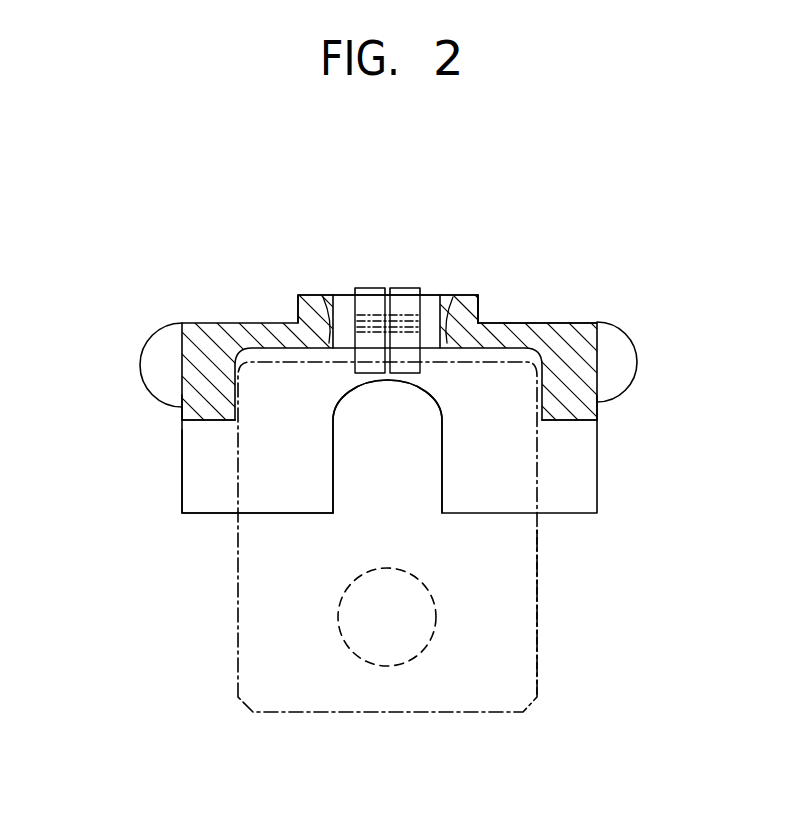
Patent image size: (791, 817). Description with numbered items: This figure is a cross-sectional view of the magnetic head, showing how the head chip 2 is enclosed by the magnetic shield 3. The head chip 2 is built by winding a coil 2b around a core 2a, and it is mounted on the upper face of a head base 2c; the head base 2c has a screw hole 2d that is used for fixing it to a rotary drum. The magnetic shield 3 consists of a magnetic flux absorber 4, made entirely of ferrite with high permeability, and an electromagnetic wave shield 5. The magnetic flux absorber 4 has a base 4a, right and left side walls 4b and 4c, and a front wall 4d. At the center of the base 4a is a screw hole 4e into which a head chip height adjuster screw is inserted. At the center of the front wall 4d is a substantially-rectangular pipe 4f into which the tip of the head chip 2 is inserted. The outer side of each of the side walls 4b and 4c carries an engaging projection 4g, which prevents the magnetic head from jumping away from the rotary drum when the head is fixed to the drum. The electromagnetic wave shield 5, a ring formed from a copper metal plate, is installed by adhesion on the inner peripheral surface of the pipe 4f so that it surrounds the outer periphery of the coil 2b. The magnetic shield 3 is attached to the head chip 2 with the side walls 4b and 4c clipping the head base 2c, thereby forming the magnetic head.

The head chip 2 is at (230, 624).
The core 2a is at (404, 288).
The coil 2b is at (408, 310).
The head base 2c is at (500, 568).
The screw hole 2d is at (435, 635).
The magnetic shield 3 is at (322, 230).
The magnetic flux absorber 4 is at (236, 316).
The base 4a is at (195, 477).
The side wall 4b is at (192, 413).
The side wall 4c is at (580, 407).
The front wall 4d is at (542, 327).
The screw hole 4e is at (345, 487).
The substantially-rectangular pipe 4f is at (474, 312).
The engaging projection 4g is at (157, 350).
The electromagnetic wave shield 5 is at (332, 294).